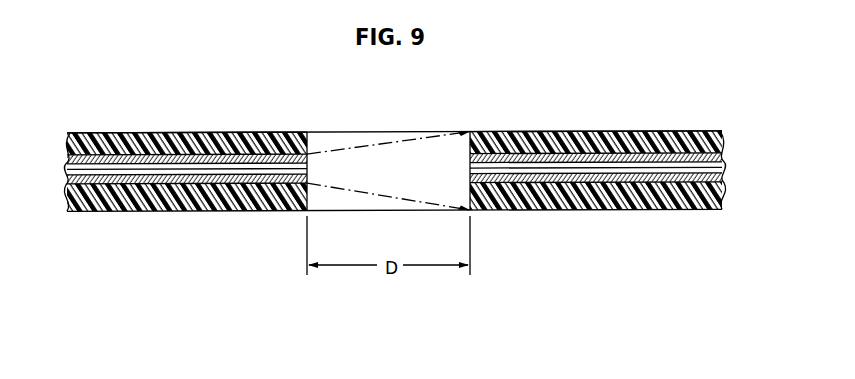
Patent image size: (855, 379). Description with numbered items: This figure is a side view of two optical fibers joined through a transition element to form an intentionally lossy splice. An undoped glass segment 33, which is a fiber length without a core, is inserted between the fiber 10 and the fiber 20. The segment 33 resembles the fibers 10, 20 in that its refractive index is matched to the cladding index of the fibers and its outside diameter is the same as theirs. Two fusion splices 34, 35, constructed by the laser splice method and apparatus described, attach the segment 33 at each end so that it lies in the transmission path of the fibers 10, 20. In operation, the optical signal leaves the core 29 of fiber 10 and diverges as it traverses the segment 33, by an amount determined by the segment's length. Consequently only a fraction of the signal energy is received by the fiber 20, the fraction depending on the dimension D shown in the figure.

The fiber 10 is at (117, 132).
The fiber 20 is at (672, 131).
The core 29 is at (117, 212).
The undoped glass segment 33 is at (385, 132).
The fusion splice 34 is at (473, 211).
The fusion splice 35 is at (305, 213).